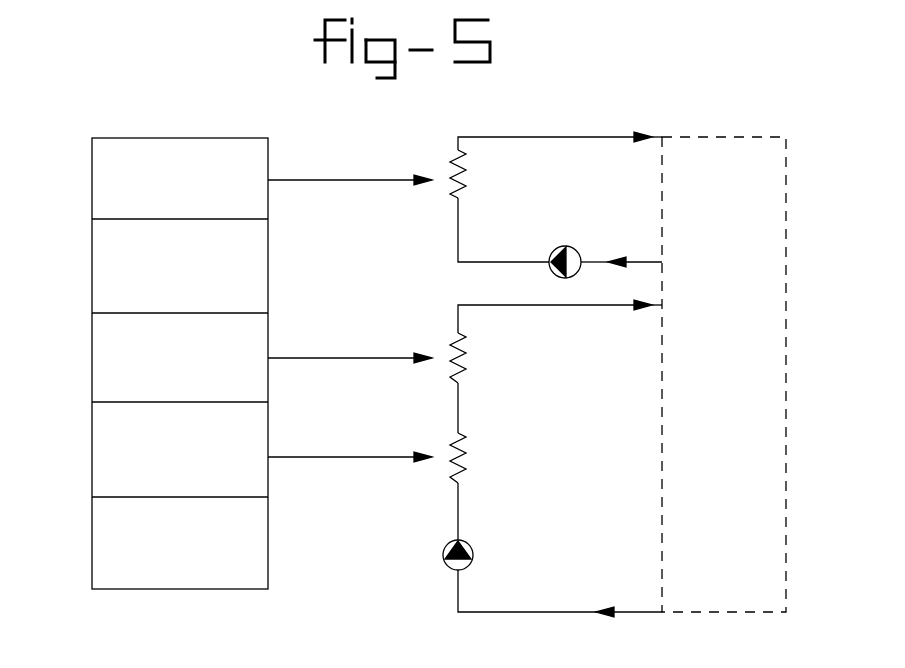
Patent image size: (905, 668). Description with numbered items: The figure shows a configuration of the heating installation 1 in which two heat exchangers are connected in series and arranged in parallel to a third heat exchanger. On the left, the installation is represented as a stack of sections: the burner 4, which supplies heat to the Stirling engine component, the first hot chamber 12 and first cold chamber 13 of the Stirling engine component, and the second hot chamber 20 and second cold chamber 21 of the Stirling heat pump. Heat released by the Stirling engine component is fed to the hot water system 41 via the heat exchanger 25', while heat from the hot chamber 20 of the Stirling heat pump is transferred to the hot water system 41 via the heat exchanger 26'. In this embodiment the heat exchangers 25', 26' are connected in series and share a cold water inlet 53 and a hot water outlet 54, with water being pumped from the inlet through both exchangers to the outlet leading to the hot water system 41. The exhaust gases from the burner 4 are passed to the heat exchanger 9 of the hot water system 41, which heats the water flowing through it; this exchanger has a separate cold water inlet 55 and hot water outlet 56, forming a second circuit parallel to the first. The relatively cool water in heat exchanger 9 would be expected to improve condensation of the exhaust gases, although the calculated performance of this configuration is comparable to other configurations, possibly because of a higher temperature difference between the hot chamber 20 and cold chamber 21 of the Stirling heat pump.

The heating installation 1 is at (682, 90).
The burner 4 is at (100, 178).
The heat exchanger 9 is at (466, 170).
The first hot chamber 12 is at (100, 257).
The first cold chamber 13 is at (100, 351).
The second hot chamber 20 is at (106, 433).
The second cold chamber 21 is at (106, 534).
The heat exchanger 25' is at (492, 368).
The heat exchanger 26' is at (497, 435).
The hot water system 41 is at (713, 152).
The cold water inlet 53 is at (537, 612).
The hot water outlet 54 is at (527, 305).
The cold water inlet 55 is at (484, 262).
The hot water outlet 56 is at (550, 137).